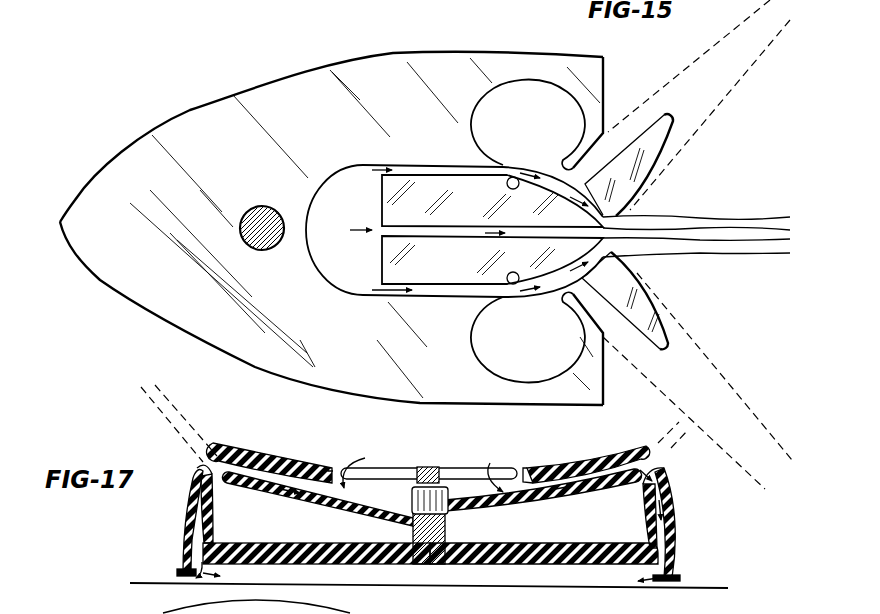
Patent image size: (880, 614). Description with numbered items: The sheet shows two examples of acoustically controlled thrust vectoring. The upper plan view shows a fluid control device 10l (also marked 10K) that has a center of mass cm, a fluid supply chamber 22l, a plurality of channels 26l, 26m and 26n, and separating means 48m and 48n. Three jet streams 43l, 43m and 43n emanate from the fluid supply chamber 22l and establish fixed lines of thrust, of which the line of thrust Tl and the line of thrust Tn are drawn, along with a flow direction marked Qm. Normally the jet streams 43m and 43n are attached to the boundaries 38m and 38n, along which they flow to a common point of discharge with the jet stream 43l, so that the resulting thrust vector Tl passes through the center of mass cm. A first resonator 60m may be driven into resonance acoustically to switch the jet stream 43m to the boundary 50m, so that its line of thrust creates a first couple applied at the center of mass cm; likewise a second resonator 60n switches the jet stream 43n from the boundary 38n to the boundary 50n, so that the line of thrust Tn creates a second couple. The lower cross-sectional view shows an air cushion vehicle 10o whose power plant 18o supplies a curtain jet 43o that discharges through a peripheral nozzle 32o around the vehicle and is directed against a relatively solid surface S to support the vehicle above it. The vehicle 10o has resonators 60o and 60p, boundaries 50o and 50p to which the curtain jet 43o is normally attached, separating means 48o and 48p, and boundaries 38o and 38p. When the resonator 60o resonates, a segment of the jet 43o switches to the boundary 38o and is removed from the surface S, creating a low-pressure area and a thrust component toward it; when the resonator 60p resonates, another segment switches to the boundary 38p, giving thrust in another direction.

In FIG. 15, the water craft body 10K is at (331, 205).
In FIG. 15, the fluid control device 10l is at (168, 353).
In FIG. 15, the center of mass cm is at (262, 206).
In FIG. 15, the fluid supply chamber 22l is at (333, 183).
In FIG. 15, the jet stream 43m is at (372, 170).
In FIG. 15, the jet stream 43l is at (350, 232).
In FIG. 15, the jet stream 43n is at (372, 296).
In FIG. 15, the channel 26m is at (443, 175).
In FIG. 15, the channel 26l is at (436, 236).
In FIG. 15, the channel 26n is at (433, 294).
In FIG. 15, the separating means 48m is at (515, 178).
In FIG. 15, the separating means 48n is at (513, 292).
In FIG. 15, the first resonator 60m is at (537, 80).
In FIG. 15, the second resonator 60n is at (470, 358).
In FIG. 15, the boundary 50m is at (612, 136).
In FIG. 15, the boundary 50n is at (580, 306).
In FIG. 15, the boundary 38m is at (606, 212).
In FIG. 15, the boundary 38n is at (597, 254).
In FIG. 15, the line of thrust Tl is at (773, 234).
In FIG. 15, the line of thrust Tn is at (743, 431).
In FIG. 15, the flow direction Qm is at (752, 39).
In FIG. 17, the air cushion vehicle 10o is at (329, 455).
In FIG. 17, the curtain jet 43o is at (203, 457).
In FIG. 17, the separating means 48o is at (222, 453).
In FIG. 17, the separating means 48p is at (640, 463).
In FIG. 17, the boundary 38o is at (279, 470).
In FIG. 17, the boundary 38p is at (549, 473).
In FIG. 17, the power plant 18o is at (428, 473).
In FIG. 17, the boundary 50o is at (213, 512).
In FIG. 17, the boundary 50p is at (659, 510).
In FIG. 17, the resonator 60o is at (315, 536).
In FIG. 17, the resonator 60p is at (555, 539).
In FIG. 17, the peripheral nozzle 32o is at (200, 585).
In FIG. 17, the surface S is at (557, 586).